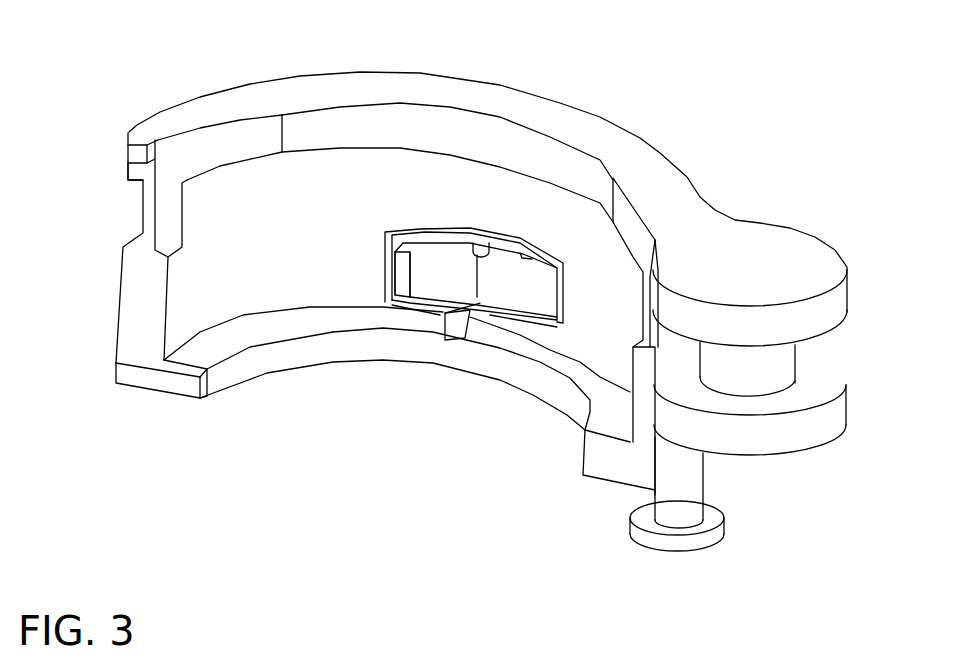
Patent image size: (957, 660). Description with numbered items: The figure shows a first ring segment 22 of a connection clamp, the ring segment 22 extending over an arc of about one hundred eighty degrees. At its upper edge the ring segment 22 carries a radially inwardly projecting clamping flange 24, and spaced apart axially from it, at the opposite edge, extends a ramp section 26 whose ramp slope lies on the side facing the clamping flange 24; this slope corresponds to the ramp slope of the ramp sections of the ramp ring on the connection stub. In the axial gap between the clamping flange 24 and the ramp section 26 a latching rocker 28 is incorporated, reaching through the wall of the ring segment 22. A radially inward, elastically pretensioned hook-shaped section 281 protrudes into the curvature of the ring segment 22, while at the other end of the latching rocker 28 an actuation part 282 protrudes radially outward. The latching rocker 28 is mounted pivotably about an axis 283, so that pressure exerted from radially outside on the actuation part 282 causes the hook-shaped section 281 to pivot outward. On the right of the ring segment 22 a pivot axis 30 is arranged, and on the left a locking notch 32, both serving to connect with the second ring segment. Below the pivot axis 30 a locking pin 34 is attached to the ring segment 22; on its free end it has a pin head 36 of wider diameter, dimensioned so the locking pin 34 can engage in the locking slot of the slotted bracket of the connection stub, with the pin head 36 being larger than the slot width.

The ring segment 22 is at (188, 72).
The clamping flange 24 is at (373, 127).
The ramp section 26 is at (257, 360).
The latching rocker 28 is at (478, 295).
The hook-shaped section 281 is at (400, 282).
The actuation part 282 is at (537, 263).
The axis 283 is at (481, 250).
The pivot axis 30 is at (778, 365).
The locking notch 32 is at (142, 214).
The locking pin 34 is at (688, 486).
The pin head 36 is at (683, 544).